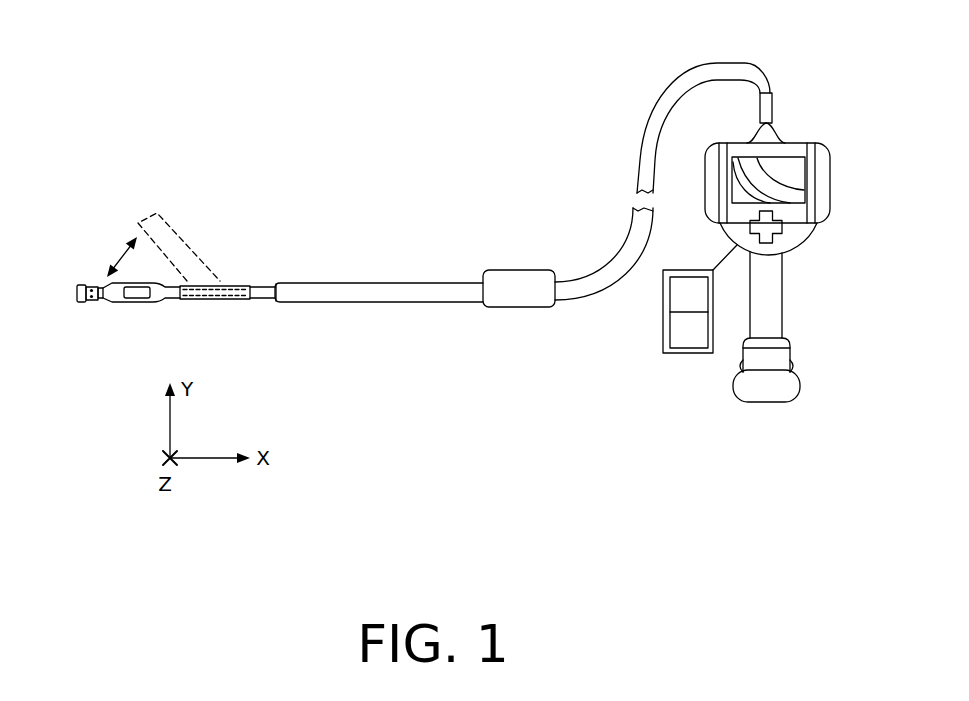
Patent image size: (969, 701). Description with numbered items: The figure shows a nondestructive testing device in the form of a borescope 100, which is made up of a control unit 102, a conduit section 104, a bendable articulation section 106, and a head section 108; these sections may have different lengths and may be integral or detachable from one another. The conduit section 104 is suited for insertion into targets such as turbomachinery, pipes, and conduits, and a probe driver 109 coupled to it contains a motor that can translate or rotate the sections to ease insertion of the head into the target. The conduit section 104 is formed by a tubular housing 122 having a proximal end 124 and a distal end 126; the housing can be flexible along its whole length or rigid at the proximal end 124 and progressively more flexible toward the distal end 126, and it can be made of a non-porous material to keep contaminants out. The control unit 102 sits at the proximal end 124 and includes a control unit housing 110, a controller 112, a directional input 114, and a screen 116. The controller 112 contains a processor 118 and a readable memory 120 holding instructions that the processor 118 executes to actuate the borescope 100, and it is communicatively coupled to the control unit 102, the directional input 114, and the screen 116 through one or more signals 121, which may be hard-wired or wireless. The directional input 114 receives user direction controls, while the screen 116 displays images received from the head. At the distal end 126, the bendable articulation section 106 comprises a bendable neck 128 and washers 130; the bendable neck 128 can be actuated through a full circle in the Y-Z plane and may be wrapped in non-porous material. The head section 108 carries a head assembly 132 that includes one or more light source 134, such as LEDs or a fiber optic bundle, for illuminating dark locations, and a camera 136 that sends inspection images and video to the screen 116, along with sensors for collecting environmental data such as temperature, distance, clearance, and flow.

The borescope 100 is at (86, 130).
The control unit 102 is at (848, 246).
The conduit section 104 is at (640, 323).
The bendable articulation section 106 is at (178, 321).
The head section 108 is at (78, 321).
The probe driver 109 is at (504, 300).
The control unit housing 110 is at (797, 397).
The controller 112 is at (690, 353).
The directional input 114 is at (782, 224).
The screen 116 is at (773, 156).
The processor 118 is at (665, 270).
The readable memory 120 is at (669, 327).
The signals 121 is at (723, 262).
The tubular housing 122 is at (365, 283).
The proximal end 124 is at (727, 63).
The distal end 126 is at (288, 283).
The bendable neck 128 is at (262, 286).
The washers 130 is at (233, 285).
The head assembly 132 is at (71, 310).
The light source 134 is at (80, 285).
The camera 136 is at (99, 284).